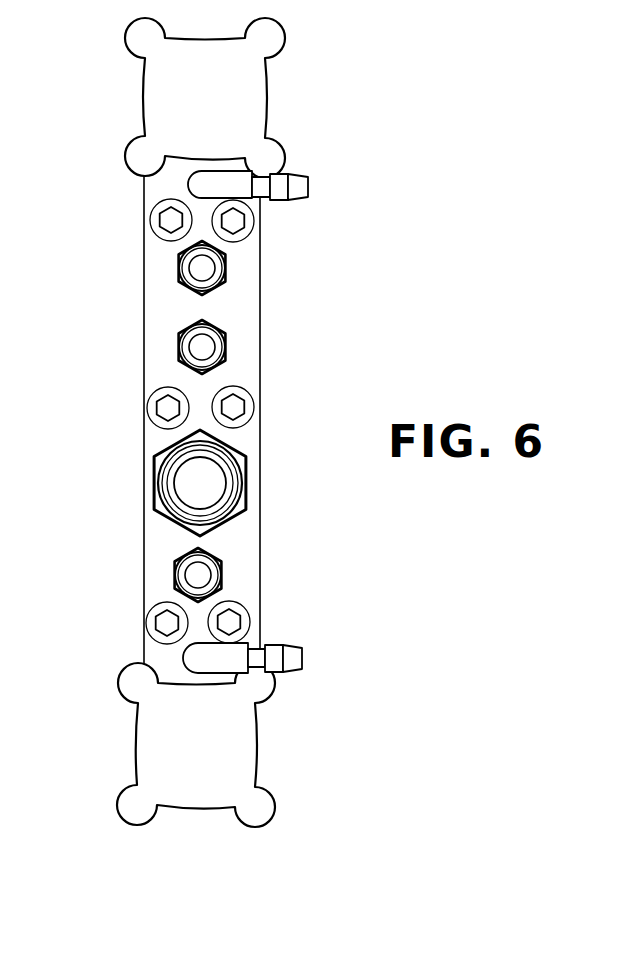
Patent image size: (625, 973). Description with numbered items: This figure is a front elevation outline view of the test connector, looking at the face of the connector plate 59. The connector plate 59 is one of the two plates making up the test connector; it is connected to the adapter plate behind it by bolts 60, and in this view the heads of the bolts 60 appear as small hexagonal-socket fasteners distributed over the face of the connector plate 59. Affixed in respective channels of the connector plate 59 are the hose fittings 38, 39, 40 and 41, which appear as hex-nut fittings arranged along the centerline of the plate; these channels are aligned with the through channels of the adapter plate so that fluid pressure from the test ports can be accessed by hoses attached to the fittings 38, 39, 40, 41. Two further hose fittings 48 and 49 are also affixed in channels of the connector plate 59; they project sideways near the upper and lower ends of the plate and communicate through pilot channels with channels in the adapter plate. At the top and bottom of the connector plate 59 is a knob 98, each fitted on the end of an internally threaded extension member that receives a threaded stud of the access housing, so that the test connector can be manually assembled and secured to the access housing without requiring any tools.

The hose fitting 38 is at (177, 575).
The hose fitting 39 is at (167, 482).
The hose fitting 40 is at (178, 348).
The hose fitting 41 is at (178, 273).
The hose fitting 48 is at (302, 660).
The hose fitting 49 is at (298, 186).
The connector plate 59 is at (237, 548).
The bolts 60 is at (168, 220).
The knob 98 is at (152, 99).